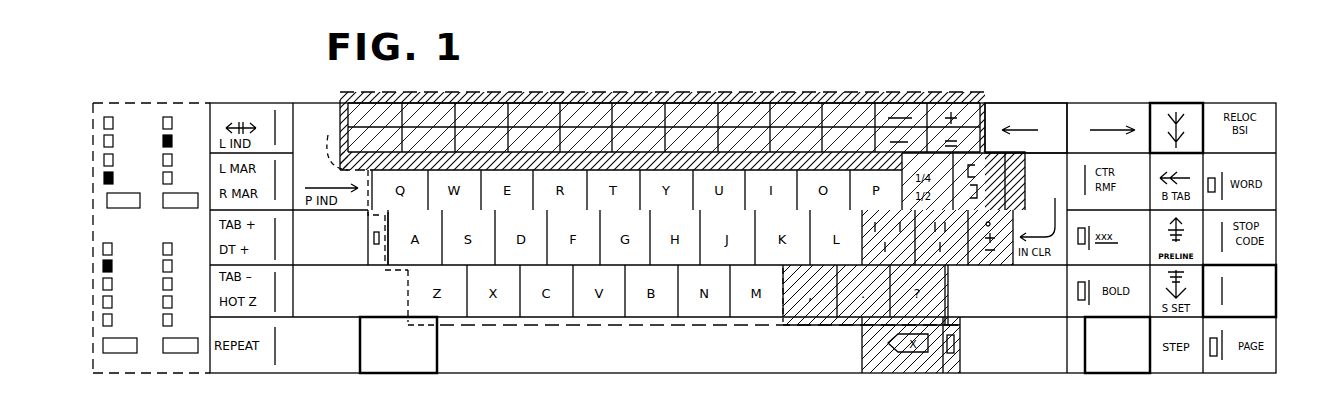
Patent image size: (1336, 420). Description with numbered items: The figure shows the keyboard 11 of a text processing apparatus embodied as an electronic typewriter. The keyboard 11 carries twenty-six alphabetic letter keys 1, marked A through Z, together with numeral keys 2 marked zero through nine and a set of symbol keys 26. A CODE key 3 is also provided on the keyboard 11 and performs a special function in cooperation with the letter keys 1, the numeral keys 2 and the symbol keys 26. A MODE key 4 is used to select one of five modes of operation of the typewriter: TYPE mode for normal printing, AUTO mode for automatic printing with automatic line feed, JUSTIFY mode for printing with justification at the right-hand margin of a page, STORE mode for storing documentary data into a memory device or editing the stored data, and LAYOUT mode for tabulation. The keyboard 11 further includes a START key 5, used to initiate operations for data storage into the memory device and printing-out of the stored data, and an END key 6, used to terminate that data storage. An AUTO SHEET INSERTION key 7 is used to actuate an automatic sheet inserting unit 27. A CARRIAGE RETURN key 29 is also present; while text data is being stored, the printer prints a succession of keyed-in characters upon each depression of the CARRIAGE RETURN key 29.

The letter keys 1 is at (646, 325).
The numeral keys 2 is at (343, 122).
The CODE key 3 is at (418, 362).
The MODE key 4 is at (133, 345).
The START key 5 is at (1140, 360).
The END key 6 is at (1277, 292).
The AUTO SHEET INSERTION key 7 is at (1160, 112).
The keyboard 11 is at (781, 88).
The symbol keys 26 is at (900, 96).
The automatic sheet inserting unit 27 is at (228, 416).
The CARRIAGE RETURN key 29 is at (1042, 172).